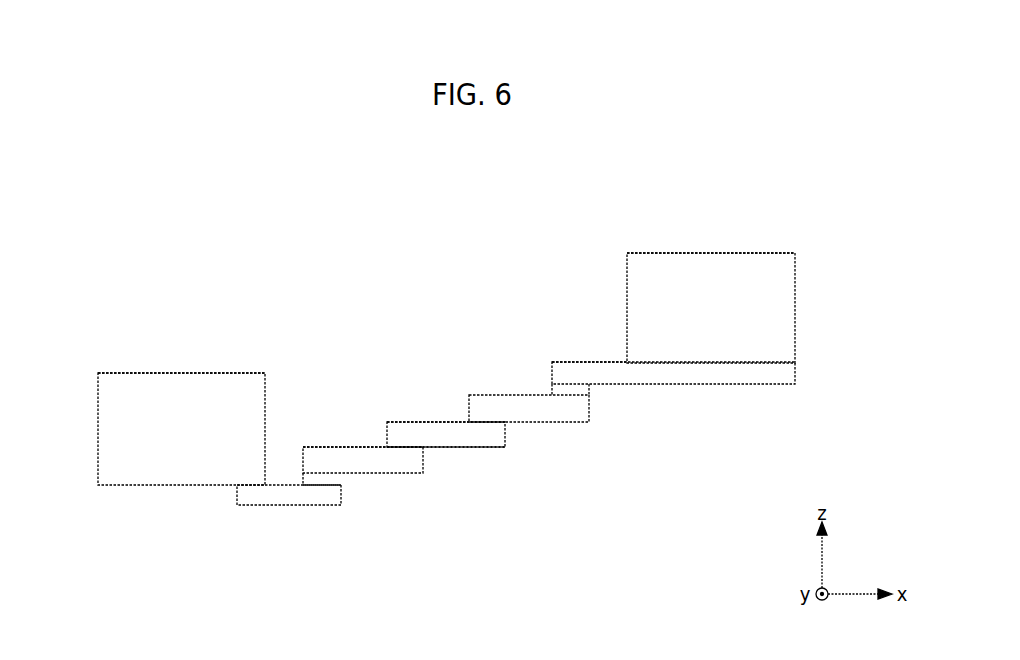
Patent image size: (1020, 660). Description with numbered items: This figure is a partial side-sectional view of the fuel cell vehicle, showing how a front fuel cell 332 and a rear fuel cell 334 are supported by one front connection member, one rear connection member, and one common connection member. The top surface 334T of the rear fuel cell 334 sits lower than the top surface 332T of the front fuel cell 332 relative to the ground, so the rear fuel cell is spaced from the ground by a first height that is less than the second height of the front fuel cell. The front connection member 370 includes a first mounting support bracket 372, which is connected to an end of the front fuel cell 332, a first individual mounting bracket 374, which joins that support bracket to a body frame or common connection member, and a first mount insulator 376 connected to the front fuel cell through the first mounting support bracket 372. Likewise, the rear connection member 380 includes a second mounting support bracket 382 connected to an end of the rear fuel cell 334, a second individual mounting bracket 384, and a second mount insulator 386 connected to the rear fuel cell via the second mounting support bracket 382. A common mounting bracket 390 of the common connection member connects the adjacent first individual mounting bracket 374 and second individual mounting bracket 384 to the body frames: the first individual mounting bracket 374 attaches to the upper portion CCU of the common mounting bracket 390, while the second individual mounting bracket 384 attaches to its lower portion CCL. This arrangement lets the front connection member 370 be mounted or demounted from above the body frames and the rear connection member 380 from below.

The front fuel cell 332 is at (780, 307).
The top surface of the front fuel cell 332T is at (709, 253).
The rear fuel cell 334 is at (112, 428).
The top surface of the rear fuel cell 334T is at (180, 373).
The front connection member 370 is at (740, 401).
The first mounting support bracket 372 is at (648, 375).
The first individual mounting bracket 374 is at (567, 412).
The first mount insulator 376 is at (580, 390).
The rear connection member 380 is at (508, 487).
The second mounting support bracket 382 is at (333, 497).
The second individual mounting bracket 384 is at (415, 458).
The second mount insulator 386 is at (333, 480).
The common mounting bracket 390 is at (497, 437).
The upper portion of the common mounting bracket CCU is at (407, 422).
The lower portion of the common mounting bracket CCL is at (485, 447).